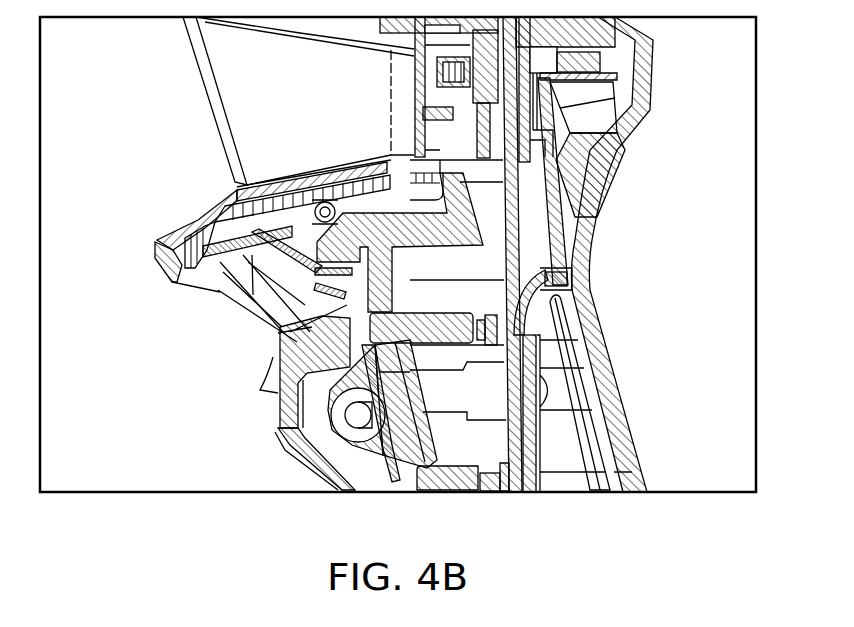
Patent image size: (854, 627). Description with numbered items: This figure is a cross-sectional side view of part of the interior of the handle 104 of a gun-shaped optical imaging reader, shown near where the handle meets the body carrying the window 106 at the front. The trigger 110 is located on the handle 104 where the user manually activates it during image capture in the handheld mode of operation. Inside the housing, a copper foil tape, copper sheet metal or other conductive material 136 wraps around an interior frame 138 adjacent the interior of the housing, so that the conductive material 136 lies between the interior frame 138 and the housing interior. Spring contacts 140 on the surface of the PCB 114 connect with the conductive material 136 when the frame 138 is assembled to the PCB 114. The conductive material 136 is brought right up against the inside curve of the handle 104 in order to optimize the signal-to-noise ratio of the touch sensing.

The lower handle 104 is at (637, 447).
The window 106 is at (207, 105).
The trigger 110 is at (300, 352).
The PCB 114 is at (560, 240).
The conductive material 136 is at (553, 278).
The interior frame 138 is at (593, 213).
The spring contacts 140 is at (573, 303).